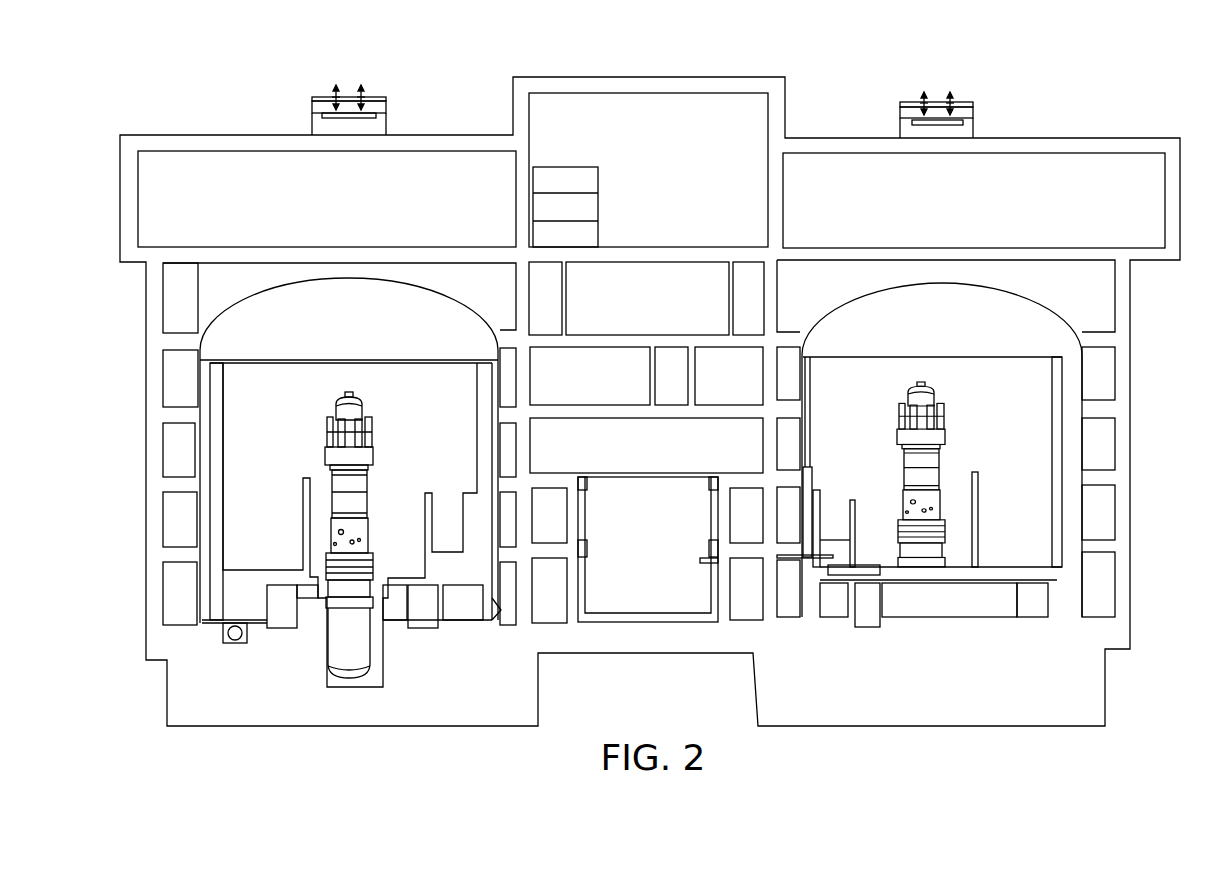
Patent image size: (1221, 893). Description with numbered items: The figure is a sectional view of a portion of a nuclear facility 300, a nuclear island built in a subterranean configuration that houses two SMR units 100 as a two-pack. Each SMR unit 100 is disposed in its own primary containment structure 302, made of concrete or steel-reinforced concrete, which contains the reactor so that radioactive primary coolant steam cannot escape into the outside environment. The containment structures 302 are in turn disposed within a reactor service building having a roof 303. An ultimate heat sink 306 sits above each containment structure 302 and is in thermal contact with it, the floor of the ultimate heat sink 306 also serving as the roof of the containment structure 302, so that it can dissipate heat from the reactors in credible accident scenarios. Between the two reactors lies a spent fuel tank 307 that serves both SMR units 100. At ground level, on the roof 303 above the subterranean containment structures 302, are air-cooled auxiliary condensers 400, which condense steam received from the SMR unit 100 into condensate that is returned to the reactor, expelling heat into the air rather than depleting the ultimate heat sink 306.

The SMR unit 100 is at (343, 505).
The nuclear facility 300 is at (438, 108).
The primary containment structure 302 is at (482, 410).
The roof 303 is at (844, 137).
The ultimate heat sink 306 is at (480, 290).
The spent fuel tank 307 is at (662, 543).
The auxiliary condenser 400 is at (322, 95).